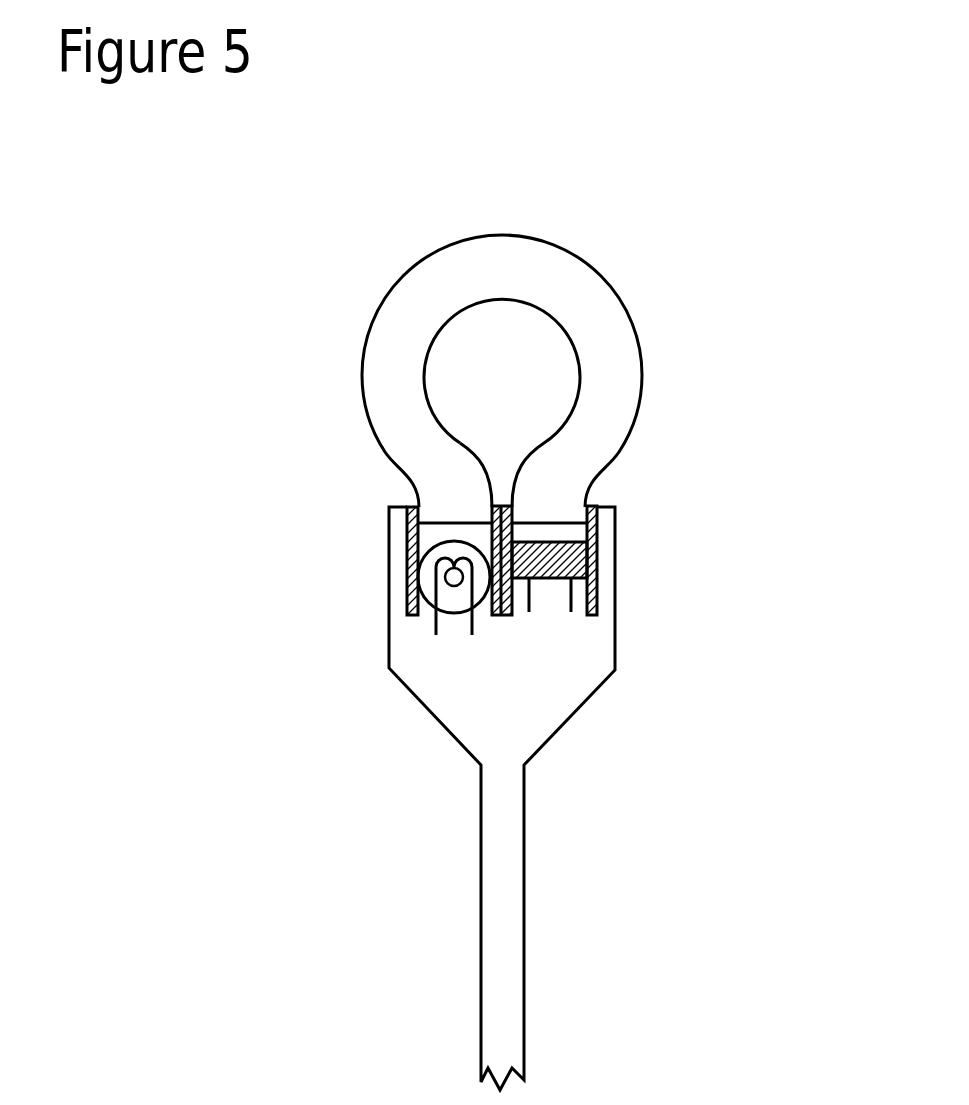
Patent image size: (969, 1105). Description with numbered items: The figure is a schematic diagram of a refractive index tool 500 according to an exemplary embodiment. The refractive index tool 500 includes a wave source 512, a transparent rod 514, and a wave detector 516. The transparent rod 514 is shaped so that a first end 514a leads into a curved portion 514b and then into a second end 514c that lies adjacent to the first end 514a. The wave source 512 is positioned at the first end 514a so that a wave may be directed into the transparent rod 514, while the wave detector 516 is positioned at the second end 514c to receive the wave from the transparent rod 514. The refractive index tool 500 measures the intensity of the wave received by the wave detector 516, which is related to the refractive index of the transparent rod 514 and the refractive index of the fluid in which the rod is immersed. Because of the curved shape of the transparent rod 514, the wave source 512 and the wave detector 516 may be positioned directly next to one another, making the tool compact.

The refractive index tool 500 is at (828, 128).
The wave source 512 is at (455, 613).
The transparent rod 514 is at (375, 313).
The first end 514a is at (396, 462).
The curved portion 514b is at (477, 236).
The second end 514c is at (616, 453).
The wave detector 516 is at (588, 532).